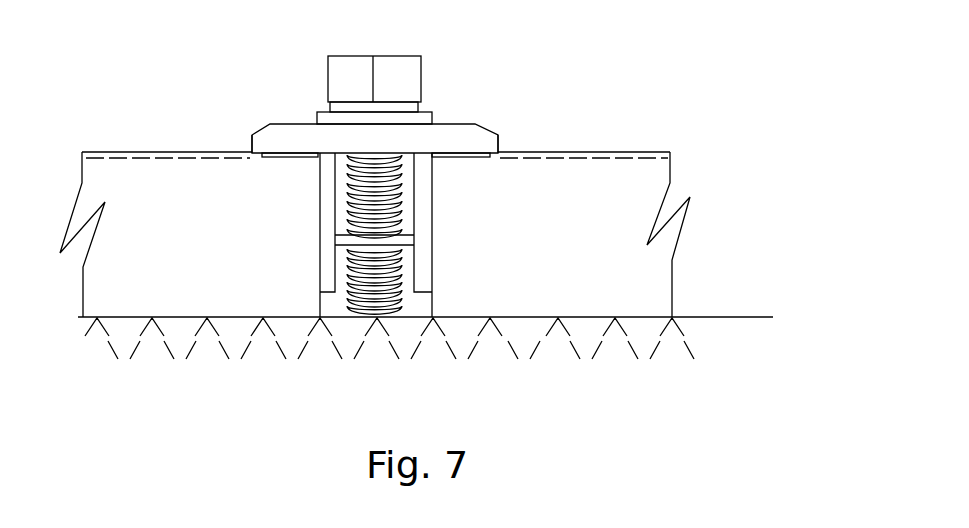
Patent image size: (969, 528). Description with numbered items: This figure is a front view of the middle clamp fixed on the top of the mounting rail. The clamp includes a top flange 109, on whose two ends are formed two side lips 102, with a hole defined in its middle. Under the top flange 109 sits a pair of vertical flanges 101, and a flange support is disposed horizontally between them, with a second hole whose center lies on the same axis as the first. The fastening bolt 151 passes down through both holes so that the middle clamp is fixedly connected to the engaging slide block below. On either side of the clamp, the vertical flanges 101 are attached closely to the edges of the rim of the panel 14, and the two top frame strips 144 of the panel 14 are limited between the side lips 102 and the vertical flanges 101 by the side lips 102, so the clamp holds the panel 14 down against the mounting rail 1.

The ground 1 is at (570, 340).
The panel 14 is at (225, 270).
The vertical flanges 101 is at (328, 236).
The side lips 102 is at (257, 152).
The top flange 109 is at (305, 142).
The top frame strips 144 is at (283, 155).
The fastening bolt 151 is at (398, 77).